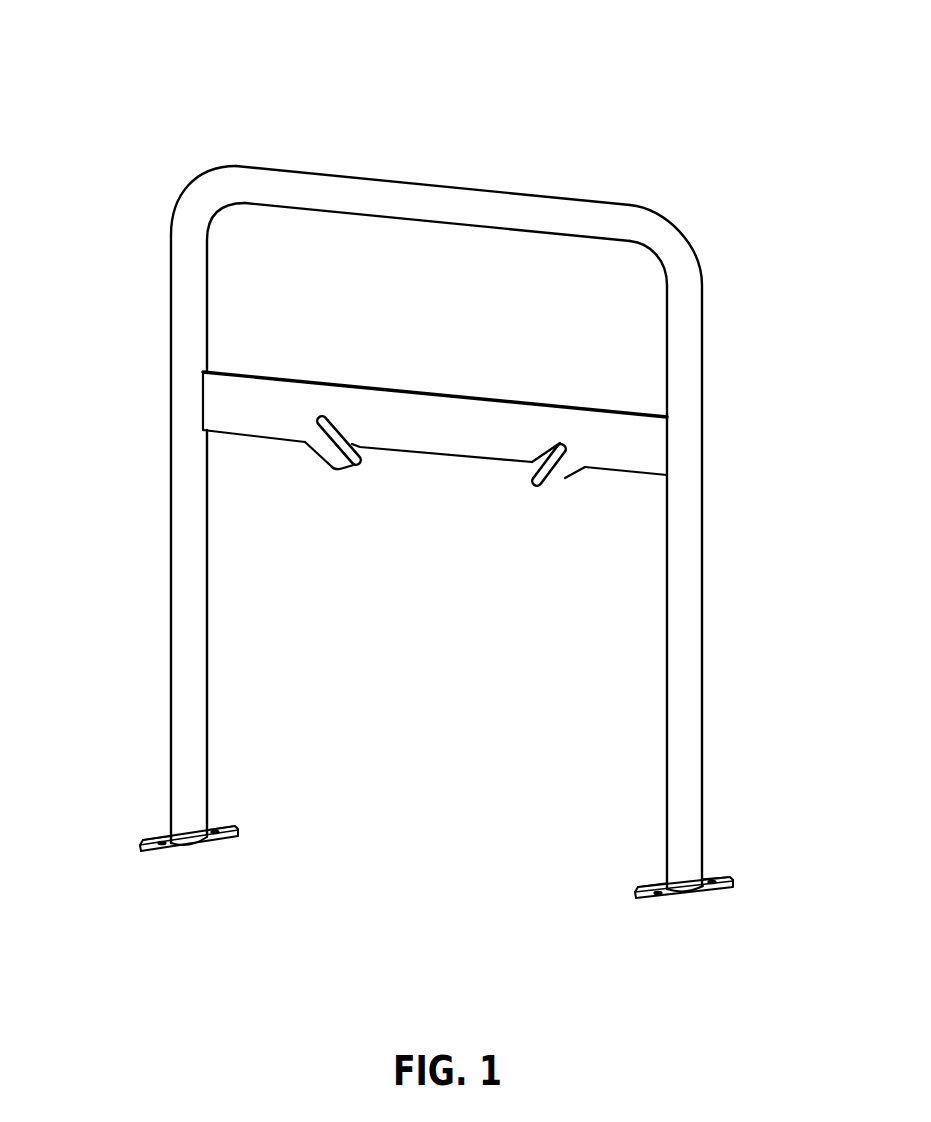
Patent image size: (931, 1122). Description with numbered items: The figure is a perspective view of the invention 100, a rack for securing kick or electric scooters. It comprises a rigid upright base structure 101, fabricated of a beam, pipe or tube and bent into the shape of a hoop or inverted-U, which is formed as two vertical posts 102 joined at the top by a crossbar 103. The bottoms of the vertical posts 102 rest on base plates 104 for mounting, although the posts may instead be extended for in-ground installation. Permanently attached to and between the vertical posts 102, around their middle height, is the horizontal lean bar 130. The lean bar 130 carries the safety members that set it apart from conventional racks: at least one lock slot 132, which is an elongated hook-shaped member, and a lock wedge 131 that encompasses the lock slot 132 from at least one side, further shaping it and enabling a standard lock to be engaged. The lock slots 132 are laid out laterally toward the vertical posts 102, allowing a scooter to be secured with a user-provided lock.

The invention 100 is at (869, 38).
The base structure 101 is at (183, 196).
The vertical posts 102 is at (693, 545).
The crossbar 103 is at (400, 183).
The base plates 104 is at (142, 850).
The horizontal lean bar 130 is at (350, 385).
The lock wedge 131 is at (550, 483).
The lock slot 132 is at (560, 443).